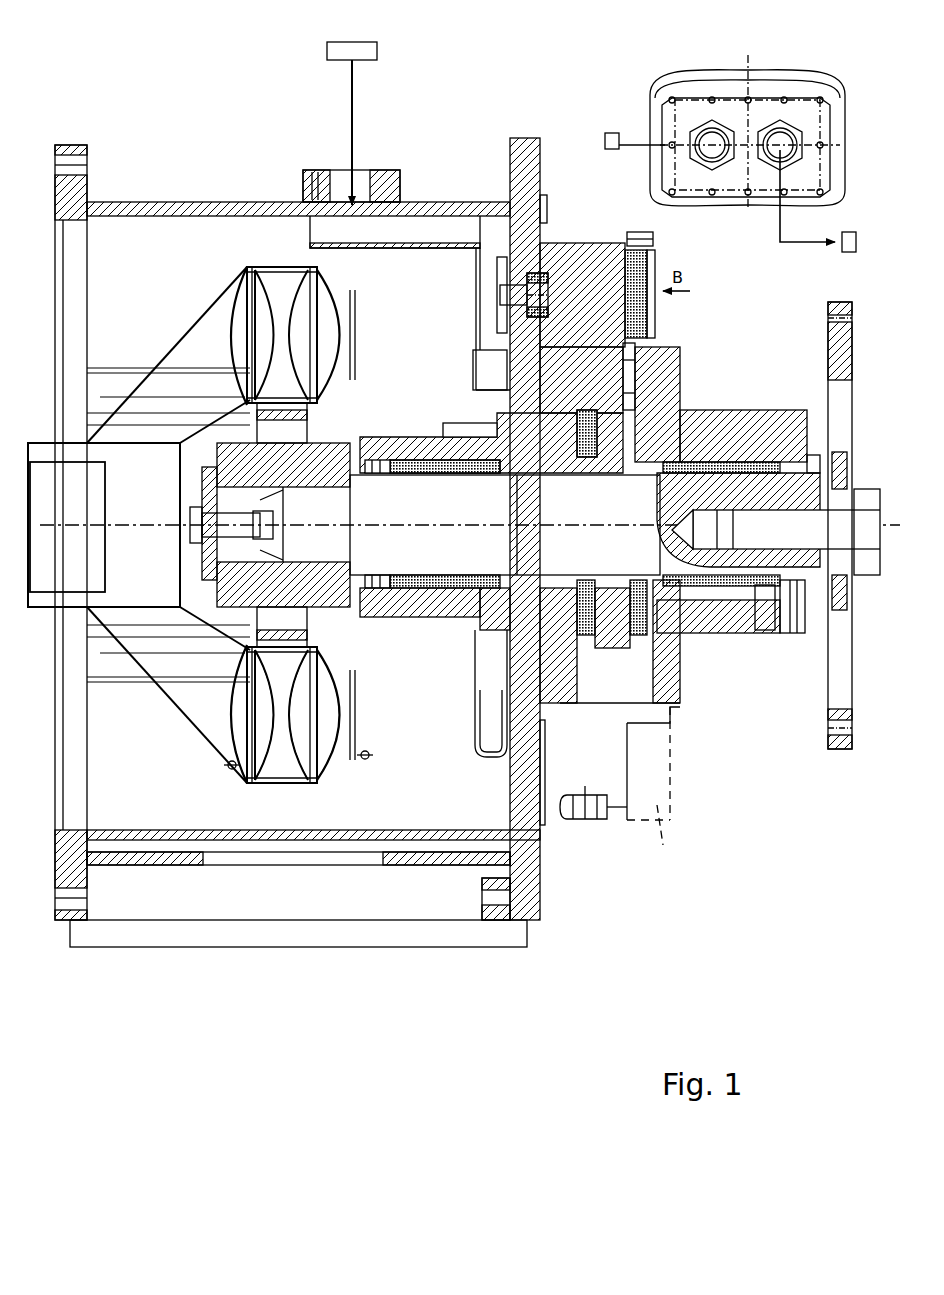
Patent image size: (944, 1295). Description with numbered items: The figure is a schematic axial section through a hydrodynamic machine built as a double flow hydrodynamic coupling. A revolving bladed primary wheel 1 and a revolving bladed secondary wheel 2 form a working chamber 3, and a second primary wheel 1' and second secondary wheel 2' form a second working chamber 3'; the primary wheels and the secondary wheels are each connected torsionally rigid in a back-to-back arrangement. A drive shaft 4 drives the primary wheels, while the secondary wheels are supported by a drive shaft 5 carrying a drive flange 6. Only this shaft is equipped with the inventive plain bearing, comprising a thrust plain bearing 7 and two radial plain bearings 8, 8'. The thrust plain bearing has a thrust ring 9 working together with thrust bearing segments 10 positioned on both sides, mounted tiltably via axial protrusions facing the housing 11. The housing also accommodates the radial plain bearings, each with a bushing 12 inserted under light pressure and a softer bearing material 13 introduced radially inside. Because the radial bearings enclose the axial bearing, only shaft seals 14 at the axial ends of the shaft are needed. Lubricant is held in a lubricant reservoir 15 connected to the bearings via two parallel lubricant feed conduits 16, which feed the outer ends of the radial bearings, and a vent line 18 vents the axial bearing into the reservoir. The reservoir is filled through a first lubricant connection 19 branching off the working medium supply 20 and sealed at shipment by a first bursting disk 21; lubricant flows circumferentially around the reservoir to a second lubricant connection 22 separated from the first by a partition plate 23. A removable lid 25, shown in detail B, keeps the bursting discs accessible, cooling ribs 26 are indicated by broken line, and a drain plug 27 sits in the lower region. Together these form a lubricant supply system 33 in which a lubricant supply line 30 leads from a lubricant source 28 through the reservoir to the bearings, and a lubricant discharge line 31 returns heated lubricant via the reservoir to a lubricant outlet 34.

The primary wheel 1 is at (248, 527).
The second primary wheel 1' is at (312, 714).
The secondary wheel 2 is at (269, 739).
The second secondary wheel 2' is at (303, 737).
The working chamber 3 is at (221, 732).
The second working chamber 3' is at (336, 733).
The drive shaft 4 is at (107, 597).
The drive shaft 5 is at (780, 590).
The drive flange 6 is at (838, 704).
The thrust plain bearing 7 is at (655, 403).
The radial plain bearing 8 is at (471, 585).
The second radial plain bearing 8' is at (718, 651).
The thrust ring 9 is at (618, 640).
The thrust bearing segments 10 is at (568, 600).
The housing 11 is at (737, 425).
The bushing 12 is at (445, 590).
The bearing material 13 is at (473, 590).
The shaft seals 14 is at (360, 600).
The lubricant reservoir 15 is at (630, 752).
The lubricant feed conduits 16 is at (488, 700).
The vent line 18 is at (600, 356).
The first lubricant connection 19 is at (548, 278).
The working medium supply 20 is at (340, 223).
The first bursting disk 21 is at (530, 296).
The second lubricant connection 22 is at (782, 140).
The partition plate 23 is at (598, 278).
The removable lid 25 is at (676, 352).
The cooling ribs 26 is at (671, 838).
The drain plug 27 is at (597, 828).
The lubricant source 28 is at (380, 48).
The lubricant supply line 30 is at (527, 285).
The lubricant discharge line 31 is at (790, 248).
The lubricant supply system 33 is at (558, 103).
The lubricant outlet 34 is at (846, 255).